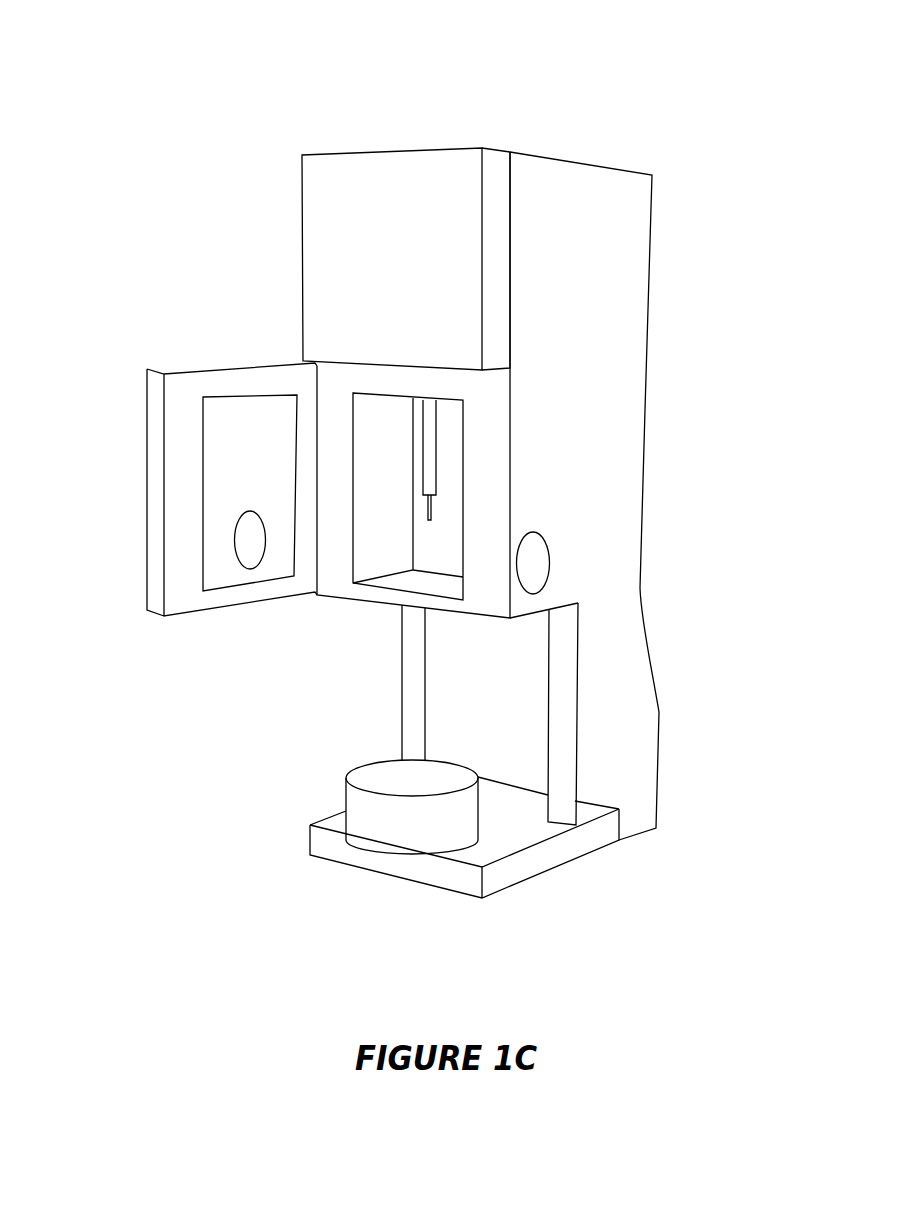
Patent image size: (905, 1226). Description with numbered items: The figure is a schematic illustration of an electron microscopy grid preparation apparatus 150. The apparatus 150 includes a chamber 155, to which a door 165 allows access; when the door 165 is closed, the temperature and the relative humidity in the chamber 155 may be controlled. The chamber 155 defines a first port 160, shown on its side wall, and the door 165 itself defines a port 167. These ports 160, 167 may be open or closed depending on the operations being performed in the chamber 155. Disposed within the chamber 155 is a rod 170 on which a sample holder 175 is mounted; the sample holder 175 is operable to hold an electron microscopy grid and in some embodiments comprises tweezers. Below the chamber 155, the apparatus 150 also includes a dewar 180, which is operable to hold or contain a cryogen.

The electron microscopy grid preparation apparatus 150 is at (713, 73).
The chamber 155 is at (377, 427).
The first port 160 is at (532, 560).
The door 165 is at (156, 486).
The port 167 is at (237, 549).
The rod 170 is at (436, 452).
The sample holder 175 is at (431, 505).
The dewar 180 is at (397, 815).